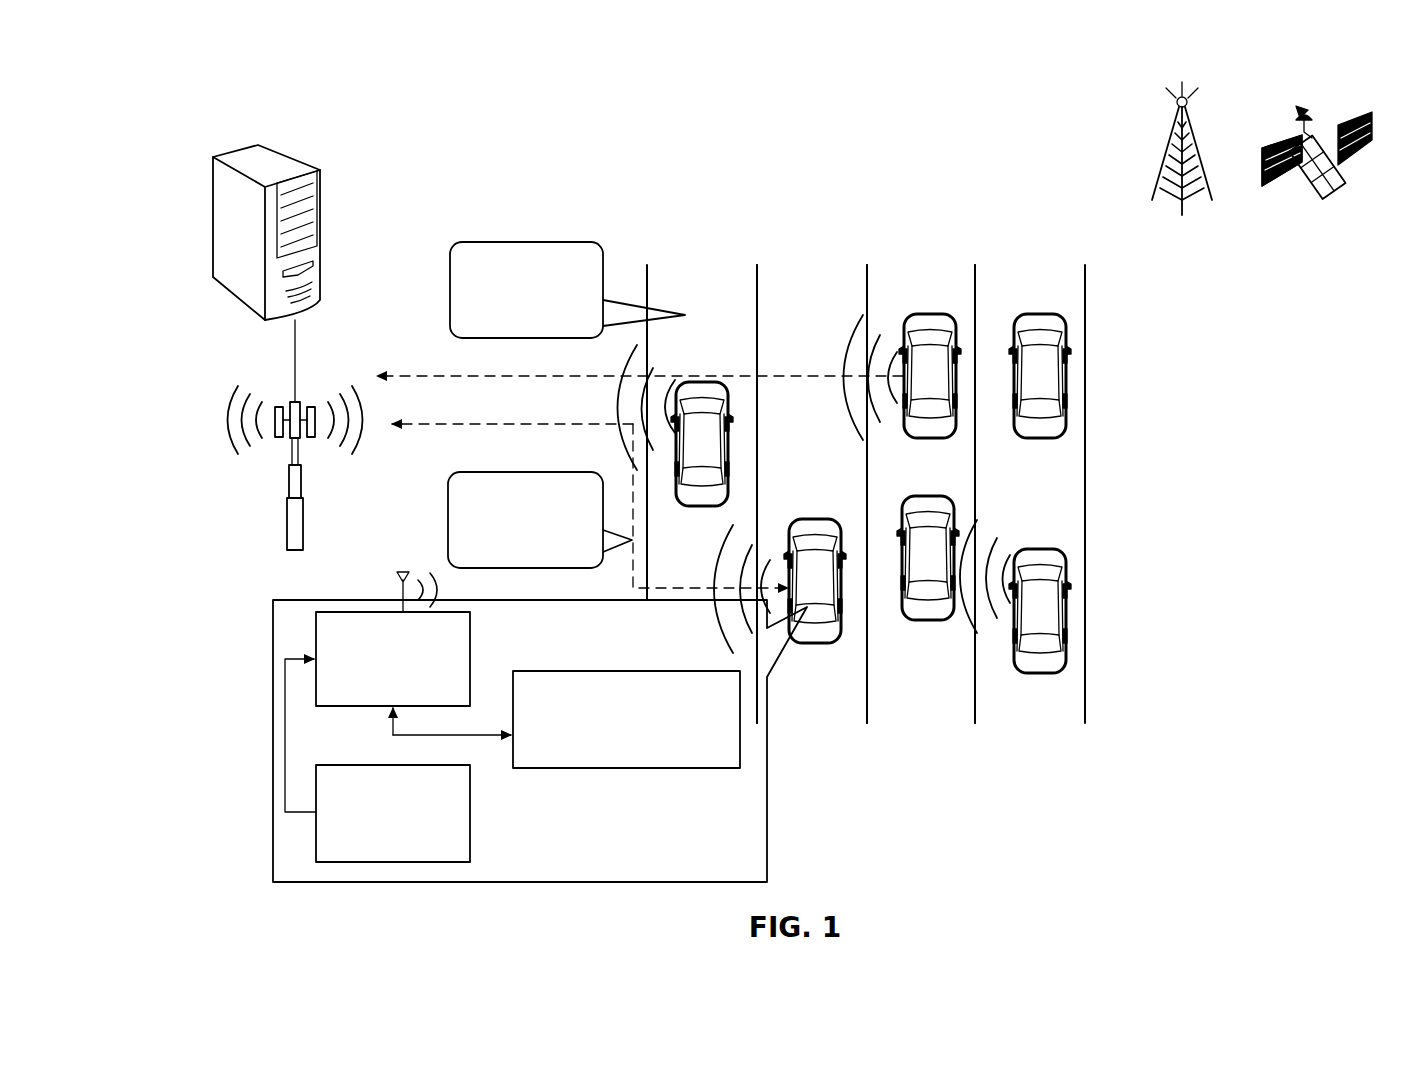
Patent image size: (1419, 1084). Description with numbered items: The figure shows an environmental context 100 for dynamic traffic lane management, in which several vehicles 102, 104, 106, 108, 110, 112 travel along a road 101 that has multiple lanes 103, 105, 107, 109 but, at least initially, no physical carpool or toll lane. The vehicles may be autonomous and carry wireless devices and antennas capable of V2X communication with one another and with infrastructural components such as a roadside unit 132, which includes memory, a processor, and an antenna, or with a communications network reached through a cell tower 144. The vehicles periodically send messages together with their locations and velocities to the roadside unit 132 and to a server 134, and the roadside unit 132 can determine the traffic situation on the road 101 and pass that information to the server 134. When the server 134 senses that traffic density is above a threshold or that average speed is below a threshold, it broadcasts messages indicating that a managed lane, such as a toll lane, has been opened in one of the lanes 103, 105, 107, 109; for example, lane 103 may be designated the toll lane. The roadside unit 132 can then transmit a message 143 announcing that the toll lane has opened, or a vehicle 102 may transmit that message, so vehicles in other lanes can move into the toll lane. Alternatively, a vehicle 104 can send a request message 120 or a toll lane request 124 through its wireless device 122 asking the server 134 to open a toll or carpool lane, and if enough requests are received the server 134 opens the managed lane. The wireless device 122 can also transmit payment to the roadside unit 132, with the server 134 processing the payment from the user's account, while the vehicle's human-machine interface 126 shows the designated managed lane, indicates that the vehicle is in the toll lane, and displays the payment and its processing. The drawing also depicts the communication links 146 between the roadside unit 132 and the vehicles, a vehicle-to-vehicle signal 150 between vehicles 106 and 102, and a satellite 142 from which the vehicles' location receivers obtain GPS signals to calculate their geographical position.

The environmental context 100 is at (220, 92).
The road 101 is at (604, 180).
The vehicle 102 is at (703, 381).
The lane 103 is at (691, 263).
The vehicle 104 is at (811, 519).
The lane 105 is at (801, 263).
The vehicle 106 is at (932, 314).
The lane 107 is at (911, 263).
The vehicle 108 is at (930, 497).
The lane 109 is at (1008, 263).
The vehicle 110 is at (1040, 314).
The vehicle 112 is at (1040, 549).
The request message 120 is at (448, 522).
The wireless device 122 is at (340, 612).
The toll lane request 124 is at (470, 812).
The human-machine interface (HMI) 126 is at (577, 671).
The roadside unit 132 is at (288, 520).
The server 134 is at (213, 268).
The satellite 142 is at (1270, 150).
The message 143 is at (528, 242).
The cell tower 144 is at (1163, 165).
The wireless communication links 146 is at (410, 376).
The vehicle-to-vehicle signal 150 is at (840, 355).